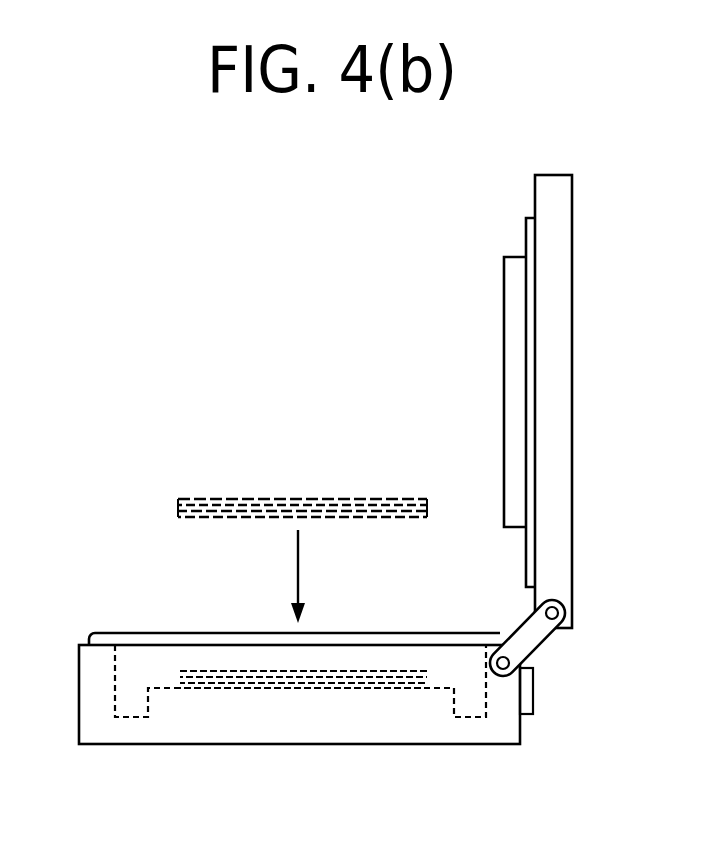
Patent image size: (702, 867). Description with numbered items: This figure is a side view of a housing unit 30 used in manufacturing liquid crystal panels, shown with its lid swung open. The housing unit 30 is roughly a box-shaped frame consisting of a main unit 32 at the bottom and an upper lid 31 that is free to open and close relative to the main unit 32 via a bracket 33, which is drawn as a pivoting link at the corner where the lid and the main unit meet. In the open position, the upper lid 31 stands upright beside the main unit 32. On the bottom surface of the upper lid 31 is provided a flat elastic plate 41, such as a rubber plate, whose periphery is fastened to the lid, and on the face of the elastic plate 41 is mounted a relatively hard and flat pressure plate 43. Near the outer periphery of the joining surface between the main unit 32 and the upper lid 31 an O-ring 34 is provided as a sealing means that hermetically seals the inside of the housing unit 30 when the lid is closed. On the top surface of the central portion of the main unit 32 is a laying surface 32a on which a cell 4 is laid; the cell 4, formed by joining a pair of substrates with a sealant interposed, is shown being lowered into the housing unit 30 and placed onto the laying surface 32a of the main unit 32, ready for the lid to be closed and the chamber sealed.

The housing unit 30 is at (559, 413).
The upper lid 31 is at (560, 413).
The elastic plate 41 is at (527, 237).
The pressure plate 43 is at (512, 417).
The bracket 33 is at (535, 643).
The main unit 32 is at (288, 727).
The laying surface 32a is at (440, 683).
The O-ring 34 is at (142, 637).
The cell 4 is at (228, 488).